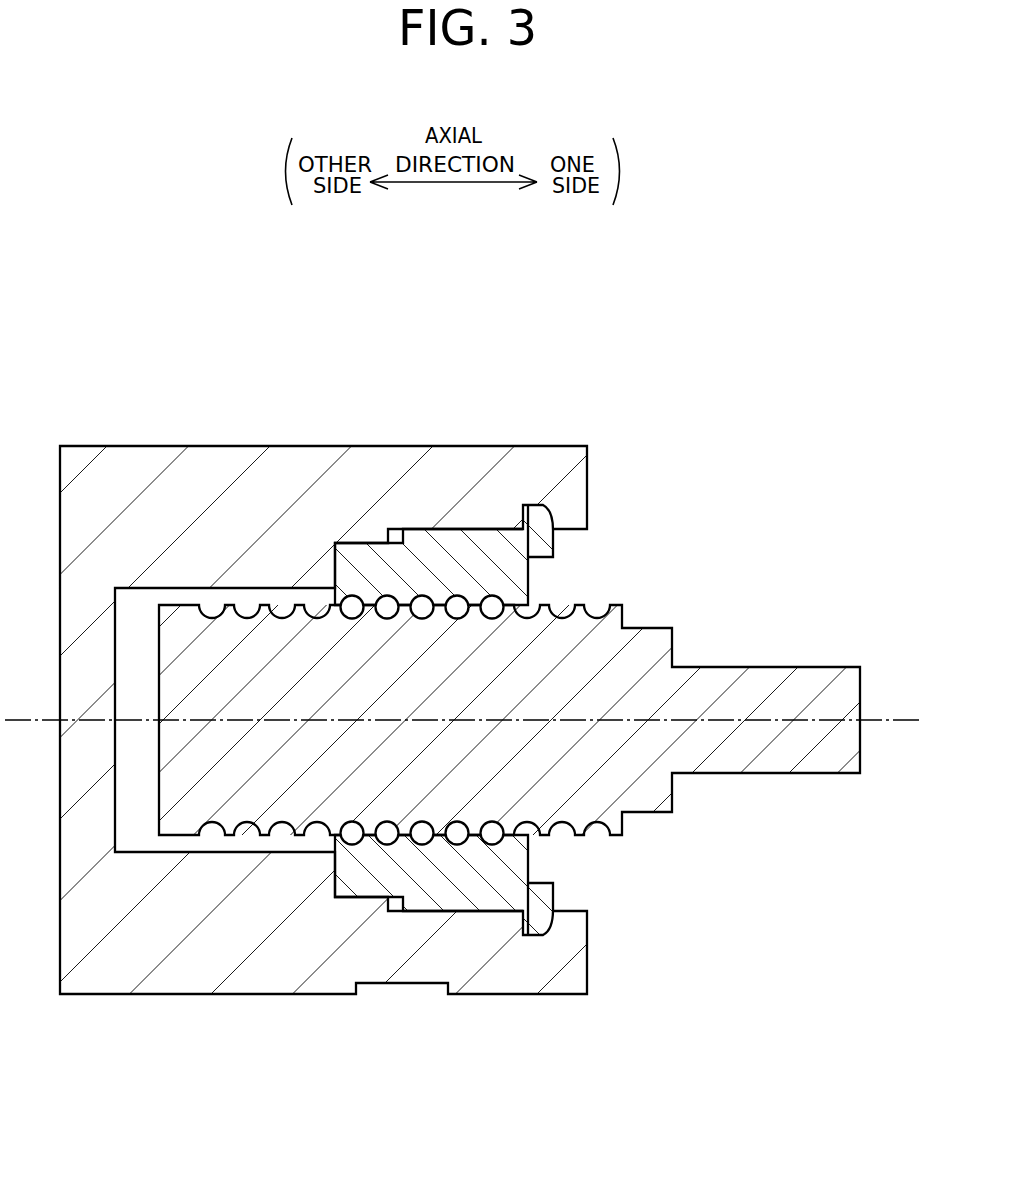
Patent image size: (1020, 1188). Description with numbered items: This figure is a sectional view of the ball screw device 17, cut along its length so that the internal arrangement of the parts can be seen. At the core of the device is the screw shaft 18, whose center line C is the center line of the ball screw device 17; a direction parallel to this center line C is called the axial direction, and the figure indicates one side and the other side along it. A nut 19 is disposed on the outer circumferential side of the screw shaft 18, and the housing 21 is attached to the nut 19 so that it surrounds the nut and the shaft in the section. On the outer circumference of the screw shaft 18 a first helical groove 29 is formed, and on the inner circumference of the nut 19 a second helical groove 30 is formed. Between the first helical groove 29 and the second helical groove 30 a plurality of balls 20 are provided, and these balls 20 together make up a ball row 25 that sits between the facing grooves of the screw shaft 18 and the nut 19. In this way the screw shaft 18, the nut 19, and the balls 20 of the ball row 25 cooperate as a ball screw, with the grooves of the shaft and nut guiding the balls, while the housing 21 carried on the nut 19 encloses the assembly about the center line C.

The ball screw device 17 is at (510, 594).
The screw shaft 18 is at (650, 660).
The nut 19 is at (510, 594).
The balls 20 is at (427, 617).
The housing 21 is at (137, 478).
The ball row 25 is at (389, 582).
The first helical groove 29 is at (492, 616).
The second helical groove 30 is at (457, 596).
The center line C is at (893, 720).